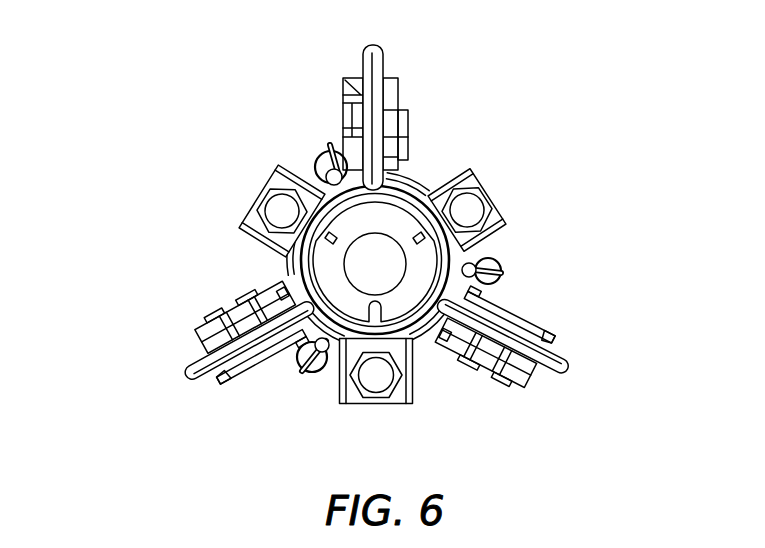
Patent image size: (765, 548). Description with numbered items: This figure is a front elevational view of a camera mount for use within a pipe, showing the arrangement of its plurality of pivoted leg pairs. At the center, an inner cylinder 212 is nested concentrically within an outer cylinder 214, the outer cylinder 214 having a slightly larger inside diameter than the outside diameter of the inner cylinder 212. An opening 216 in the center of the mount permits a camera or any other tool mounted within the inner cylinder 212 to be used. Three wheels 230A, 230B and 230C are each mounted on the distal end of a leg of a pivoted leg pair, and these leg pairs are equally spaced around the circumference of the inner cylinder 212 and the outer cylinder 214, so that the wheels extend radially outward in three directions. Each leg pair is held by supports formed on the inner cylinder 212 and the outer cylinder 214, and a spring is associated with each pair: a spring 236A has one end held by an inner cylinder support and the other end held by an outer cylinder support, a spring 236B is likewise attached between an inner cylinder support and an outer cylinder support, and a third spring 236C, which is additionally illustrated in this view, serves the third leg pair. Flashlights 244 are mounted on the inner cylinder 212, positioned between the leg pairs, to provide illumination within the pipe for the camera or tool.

The inner cylinder 212 is at (436, 322).
The outer cylinder 214 is at (405, 188).
The opening 216 is at (396, 274).
The wheel 230A is at (383, 49).
The wheel 230B is at (195, 362).
The wheel 230C is at (562, 368).
The spring 236A is at (328, 150).
The spring 236B is at (302, 373).
The third spring 236C is at (500, 270).
The flashlights 244 is at (262, 195).